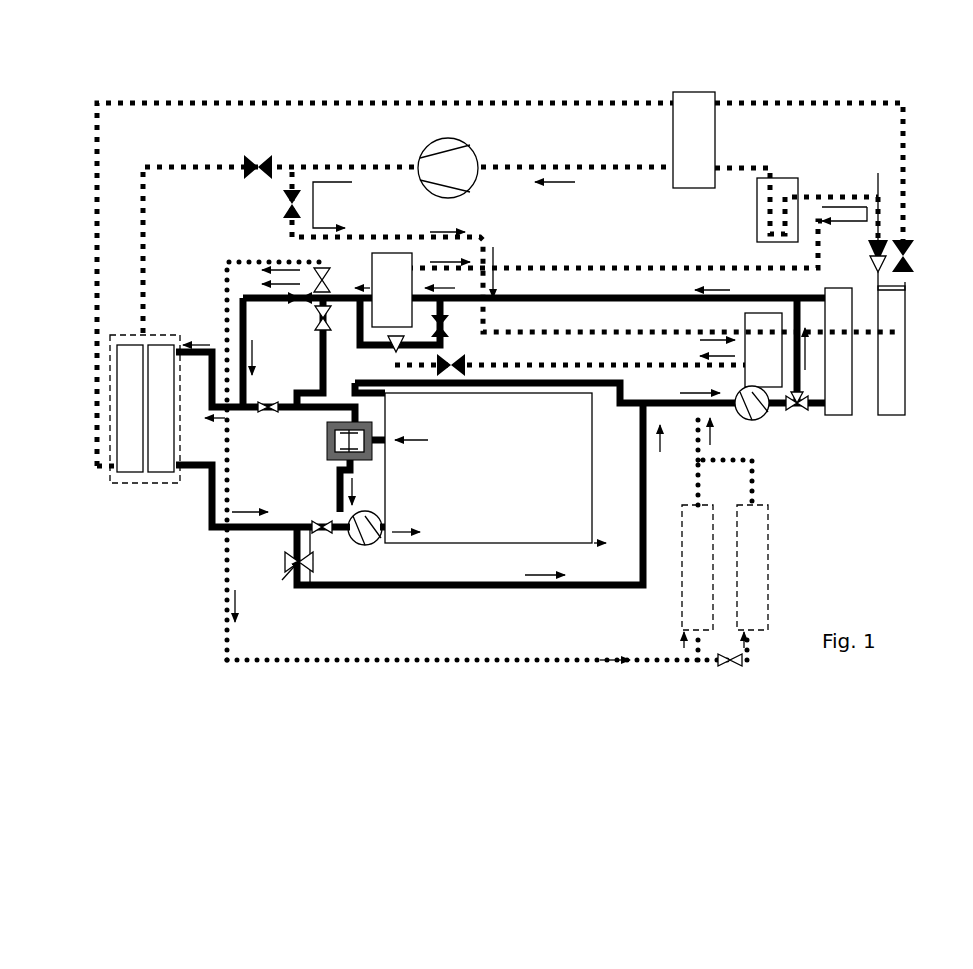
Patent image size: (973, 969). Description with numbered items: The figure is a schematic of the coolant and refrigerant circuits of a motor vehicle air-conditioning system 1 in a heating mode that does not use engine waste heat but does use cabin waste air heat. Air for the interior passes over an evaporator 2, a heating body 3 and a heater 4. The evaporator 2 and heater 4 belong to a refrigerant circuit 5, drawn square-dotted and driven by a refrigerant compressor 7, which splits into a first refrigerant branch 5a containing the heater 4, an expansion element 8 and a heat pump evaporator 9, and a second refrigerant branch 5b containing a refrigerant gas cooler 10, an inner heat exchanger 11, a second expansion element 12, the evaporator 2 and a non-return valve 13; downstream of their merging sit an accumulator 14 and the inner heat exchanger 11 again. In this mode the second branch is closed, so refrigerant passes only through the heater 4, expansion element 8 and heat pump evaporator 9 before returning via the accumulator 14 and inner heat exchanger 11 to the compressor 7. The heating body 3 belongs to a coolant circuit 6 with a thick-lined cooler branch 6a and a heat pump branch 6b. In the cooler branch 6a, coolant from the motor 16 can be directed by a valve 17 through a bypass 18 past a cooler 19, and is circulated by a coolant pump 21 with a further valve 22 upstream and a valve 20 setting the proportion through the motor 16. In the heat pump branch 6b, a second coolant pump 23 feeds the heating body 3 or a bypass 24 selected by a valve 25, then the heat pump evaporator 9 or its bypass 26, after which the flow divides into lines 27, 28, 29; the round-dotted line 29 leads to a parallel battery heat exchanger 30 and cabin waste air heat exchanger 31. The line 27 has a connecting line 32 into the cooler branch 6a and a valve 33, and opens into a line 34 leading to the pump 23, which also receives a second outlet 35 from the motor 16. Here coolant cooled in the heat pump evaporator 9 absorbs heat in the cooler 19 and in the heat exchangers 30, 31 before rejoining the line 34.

The motor vehicle air-conditioning system 1 is at (152, 590).
The evaporator 2 is at (891, 350).
The heating body 3 is at (838, 351).
The heater 4 is at (763, 350).
The refrigerant circuit 5 is at (122, 98).
The first refrigerant branch 5a is at (378, 236).
The second refrigerant branch 5b is at (163, 172).
The coolant circuit 6 is at (836, 477).
The cooler branch 6a is at (204, 546).
The heat pump branch 6b is at (809, 494).
The refrigerant compressor 7 is at (452, 180).
The expansion element 8 is at (570, 357).
The heat pump evaporator 9 is at (405, 290).
The refrigerant gas cooler 10 is at (130, 437).
The inner heat exchanger 11 is at (694, 140).
The second expansion element 12 is at (908, 252).
The non-return valve 13 is at (650, 210).
The accumulator 14 is at (785, 195).
The motor 16 is at (495, 468).
The valve 17 is at (374, 445).
The bypass 18 is at (356, 476).
The cooler 19 is at (162, 437).
The valve 20 is at (268, 414).
The coolant pump 21 is at (375, 540).
The further valve 22 is at (328, 536).
The second coolant pump 23 is at (758, 415).
The bypass 24 is at (800, 378).
The valve 25 is at (800, 410).
The bypass 26 is at (362, 328).
The line 27 is at (316, 352).
The line 28 is at (248, 306).
The line 29 is at (224, 268).
The battery heat exchanger 30 is at (750, 538).
The cabin waste air heat exchanger 31 is at (700, 576).
The connecting line 32 is at (310, 587).
The valve 33 is at (290, 578).
The line 34 is at (622, 392).
The second outlet 35 is at (385, 397).